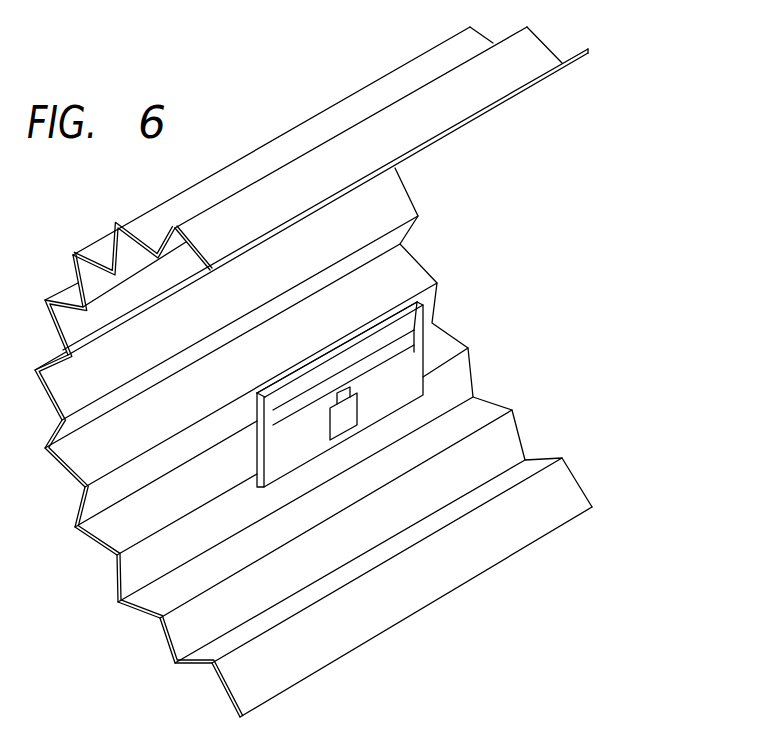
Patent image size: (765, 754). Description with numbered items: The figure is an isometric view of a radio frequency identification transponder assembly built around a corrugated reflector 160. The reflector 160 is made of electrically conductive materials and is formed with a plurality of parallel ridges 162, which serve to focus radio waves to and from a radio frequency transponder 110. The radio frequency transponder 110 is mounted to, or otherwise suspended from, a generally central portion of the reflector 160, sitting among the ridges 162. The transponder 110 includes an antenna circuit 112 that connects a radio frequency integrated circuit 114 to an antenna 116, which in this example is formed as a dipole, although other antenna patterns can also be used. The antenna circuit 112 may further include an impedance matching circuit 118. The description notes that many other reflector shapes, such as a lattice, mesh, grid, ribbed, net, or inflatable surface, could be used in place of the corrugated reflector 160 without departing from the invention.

The radio frequency transponder 110 is at (395, 384).
The antenna circuit 112 is at (273, 417).
The radio frequency integrated circuit 114 is at (340, 417).
The antenna 116 is at (282, 425).
The impedance matching circuit 118 is at (368, 350).
The corrugated reflector 160 is at (465, 580).
The parallel ridges 162 is at (510, 490).